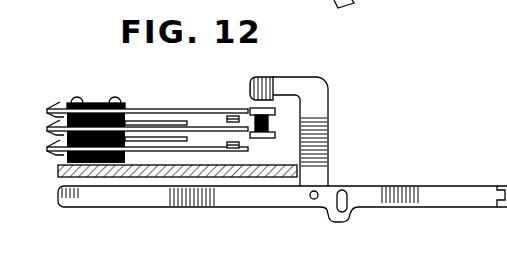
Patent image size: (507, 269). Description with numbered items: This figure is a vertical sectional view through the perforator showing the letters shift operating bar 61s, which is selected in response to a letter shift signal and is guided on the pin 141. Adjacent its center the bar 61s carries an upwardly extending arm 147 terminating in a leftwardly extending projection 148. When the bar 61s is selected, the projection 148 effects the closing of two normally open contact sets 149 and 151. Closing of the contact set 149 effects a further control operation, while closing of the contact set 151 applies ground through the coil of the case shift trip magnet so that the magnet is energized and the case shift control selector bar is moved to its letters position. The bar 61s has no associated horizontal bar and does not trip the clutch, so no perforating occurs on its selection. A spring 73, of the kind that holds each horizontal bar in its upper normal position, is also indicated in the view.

The upwardly extending arm 147 is at (329, 127).
The leftwardly extending projection 148 is at (264, 95).
The contact set 149 is at (227, 118).
The contact set 151 is at (243, 145).
The pin 141 is at (341, 208).
The letters shift operating bar 61s is at (428, 203).
The spring 73 is at (506, 93).